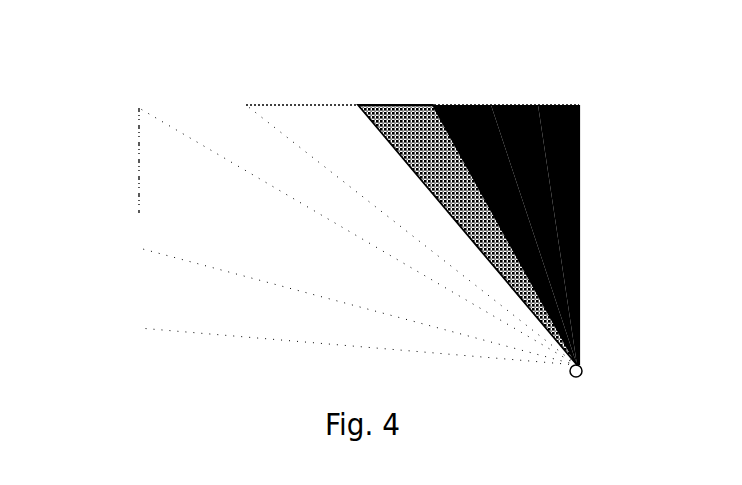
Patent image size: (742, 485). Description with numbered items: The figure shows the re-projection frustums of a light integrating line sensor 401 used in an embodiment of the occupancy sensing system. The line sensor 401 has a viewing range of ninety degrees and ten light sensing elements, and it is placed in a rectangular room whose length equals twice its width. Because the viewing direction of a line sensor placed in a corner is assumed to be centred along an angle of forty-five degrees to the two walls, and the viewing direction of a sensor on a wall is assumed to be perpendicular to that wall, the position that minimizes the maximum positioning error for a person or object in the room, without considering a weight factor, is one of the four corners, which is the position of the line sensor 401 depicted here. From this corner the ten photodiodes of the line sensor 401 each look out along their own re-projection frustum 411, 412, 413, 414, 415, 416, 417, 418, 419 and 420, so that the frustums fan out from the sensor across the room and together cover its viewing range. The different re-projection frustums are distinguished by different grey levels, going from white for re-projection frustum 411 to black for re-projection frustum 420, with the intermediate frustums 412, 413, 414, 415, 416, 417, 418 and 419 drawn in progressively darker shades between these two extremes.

The light integrating line sensor 401 is at (574, 364).
The re-projection frustum 411 is at (133, 351).
The re-projection frustum 412 is at (133, 286).
The re-projection frustum 413 is at (133, 197).
The re-projection frustum 414 is at (180, 97).
The re-projection frustum 415 is at (302, 97).
The re-projection frustum 416 is at (388, 97).
The re-projection frustum 417 is at (448, 97).
The re-projection frustum 418 is at (493, 97).
The re-projection frustum 419 is at (535, 97).
The re-projection frustum 420 is at (571, 133).